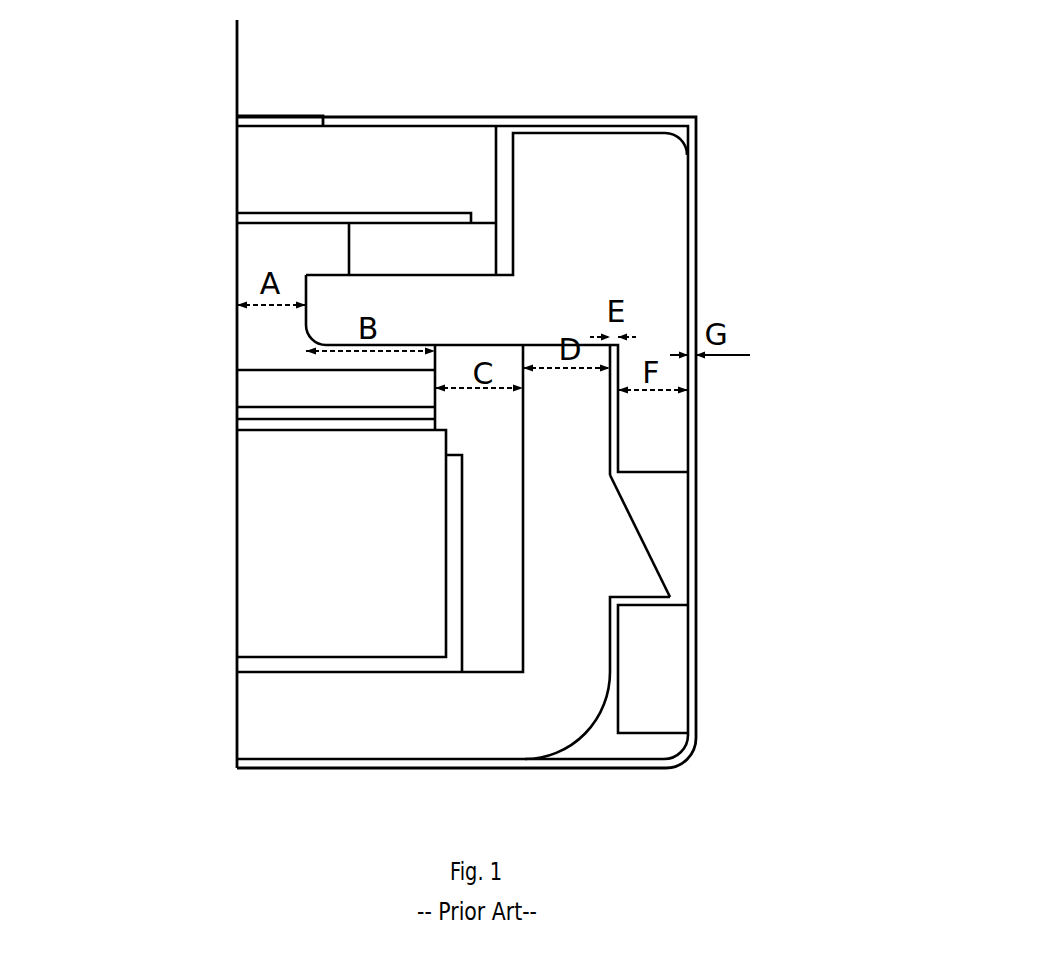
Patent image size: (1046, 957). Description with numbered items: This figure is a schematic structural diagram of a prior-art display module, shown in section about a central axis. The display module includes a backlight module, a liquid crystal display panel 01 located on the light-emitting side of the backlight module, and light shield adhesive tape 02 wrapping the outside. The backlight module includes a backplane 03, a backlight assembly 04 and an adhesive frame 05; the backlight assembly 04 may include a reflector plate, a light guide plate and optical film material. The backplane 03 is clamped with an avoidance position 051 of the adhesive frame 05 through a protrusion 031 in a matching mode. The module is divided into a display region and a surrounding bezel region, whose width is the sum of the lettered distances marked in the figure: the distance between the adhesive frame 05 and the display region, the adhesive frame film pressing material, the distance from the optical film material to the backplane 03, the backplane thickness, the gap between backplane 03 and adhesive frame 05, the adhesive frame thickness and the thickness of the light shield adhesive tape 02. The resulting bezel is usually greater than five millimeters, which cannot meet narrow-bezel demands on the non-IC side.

The liquid crystal display panel 01 is at (370, 175).
The light shield adhesive tape 02 is at (697, 675).
The backplane 03 is at (393, 732).
The protrusion 031 is at (625, 570).
The backlight assembly 04 is at (370, 527).
The adhesive frame 05 is at (602, 220).
The avoidance position 051 is at (642, 507).